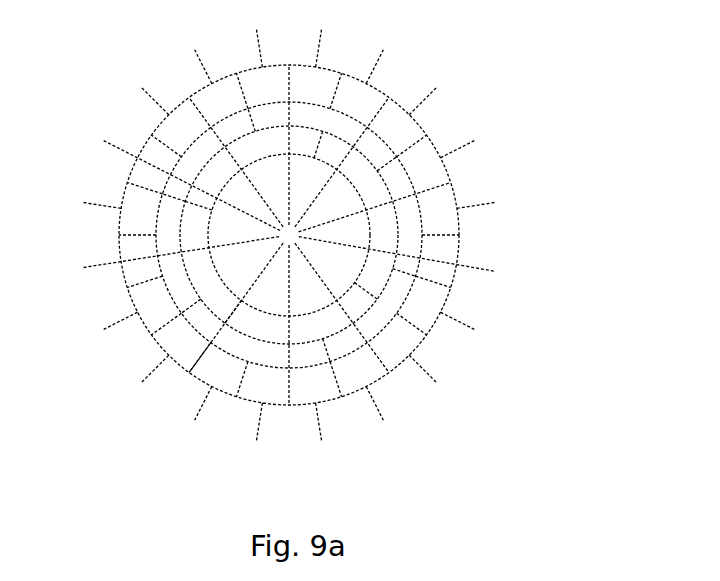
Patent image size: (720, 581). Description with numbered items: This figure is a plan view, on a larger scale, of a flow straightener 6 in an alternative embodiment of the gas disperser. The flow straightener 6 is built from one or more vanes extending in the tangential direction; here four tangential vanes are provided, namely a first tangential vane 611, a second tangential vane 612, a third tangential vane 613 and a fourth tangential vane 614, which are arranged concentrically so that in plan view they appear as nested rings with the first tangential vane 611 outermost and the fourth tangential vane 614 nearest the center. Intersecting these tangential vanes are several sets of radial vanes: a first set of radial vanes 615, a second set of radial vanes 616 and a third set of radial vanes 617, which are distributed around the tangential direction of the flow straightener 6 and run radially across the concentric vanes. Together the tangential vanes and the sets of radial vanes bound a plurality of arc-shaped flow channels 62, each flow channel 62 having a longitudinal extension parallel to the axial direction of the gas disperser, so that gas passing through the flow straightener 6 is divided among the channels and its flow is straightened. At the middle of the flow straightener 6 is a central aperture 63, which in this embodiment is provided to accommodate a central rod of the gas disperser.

The flow straightener 6 is at (577, 187).
The first tangential vane 611 is at (420, 128).
The second tangential vane 612 is at (347, 357).
The third tangential vane 613 is at (240, 333).
The fourth tangential vane 614 is at (220, 282).
The first set of radial vanes 615 is at (97, 265).
The second set of radial vanes 616 is at (137, 235).
The third set of radial vanes 617 is at (158, 190).
The flow channel 62 is at (427, 298).
The central aperture 63 is at (292, 233).